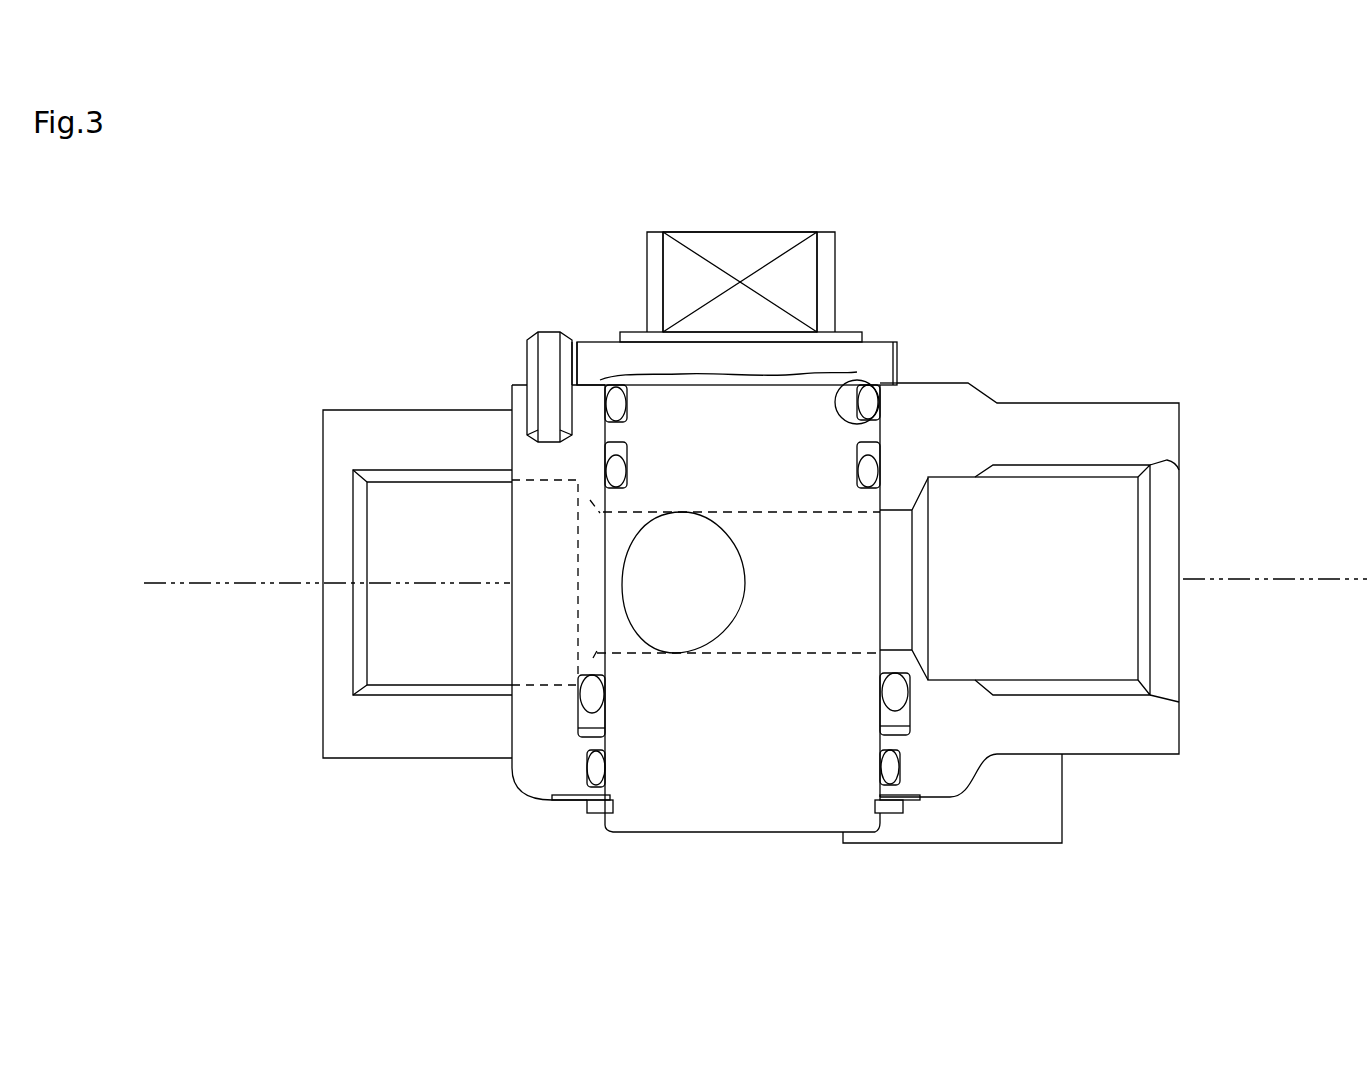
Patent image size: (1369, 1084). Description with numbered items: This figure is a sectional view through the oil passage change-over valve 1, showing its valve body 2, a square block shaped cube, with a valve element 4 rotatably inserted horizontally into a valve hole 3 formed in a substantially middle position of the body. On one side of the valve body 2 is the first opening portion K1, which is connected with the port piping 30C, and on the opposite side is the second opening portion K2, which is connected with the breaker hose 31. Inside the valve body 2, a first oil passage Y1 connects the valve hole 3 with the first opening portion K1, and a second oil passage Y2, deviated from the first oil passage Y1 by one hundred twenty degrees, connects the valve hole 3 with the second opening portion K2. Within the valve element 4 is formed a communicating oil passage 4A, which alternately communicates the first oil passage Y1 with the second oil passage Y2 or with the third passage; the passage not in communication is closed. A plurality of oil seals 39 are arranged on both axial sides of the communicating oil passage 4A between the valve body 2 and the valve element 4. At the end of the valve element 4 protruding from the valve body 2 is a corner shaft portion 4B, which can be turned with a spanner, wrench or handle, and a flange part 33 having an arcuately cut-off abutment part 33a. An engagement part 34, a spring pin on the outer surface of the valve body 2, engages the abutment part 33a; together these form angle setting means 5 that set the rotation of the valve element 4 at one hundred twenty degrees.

The oil passage change-over valve 1 is at (1060, 252).
The valve body 2 is at (968, 425).
The valve hole 3 is at (853, 372).
The valve element 4 is at (847, 272).
The communicating oil passage 4A is at (742, 597).
The corner shaft portion 4B is at (738, 247).
The angle setting means 5 is at (623, 213).
The breaker hose 31 is at (207, 587).
The flange part 33 is at (595, 357).
The abutment part 33a is at (557, 360).
The engagement part 34 is at (533, 370).
The oil seal 39 is at (613, 403).
The port piping 30C is at (1288, 580).
The first opening portion K1 is at (1167, 460).
The second opening portion K2 is at (342, 464).
The first oil passage Y1 is at (892, 510).
The second oil passage Y2 is at (600, 514).